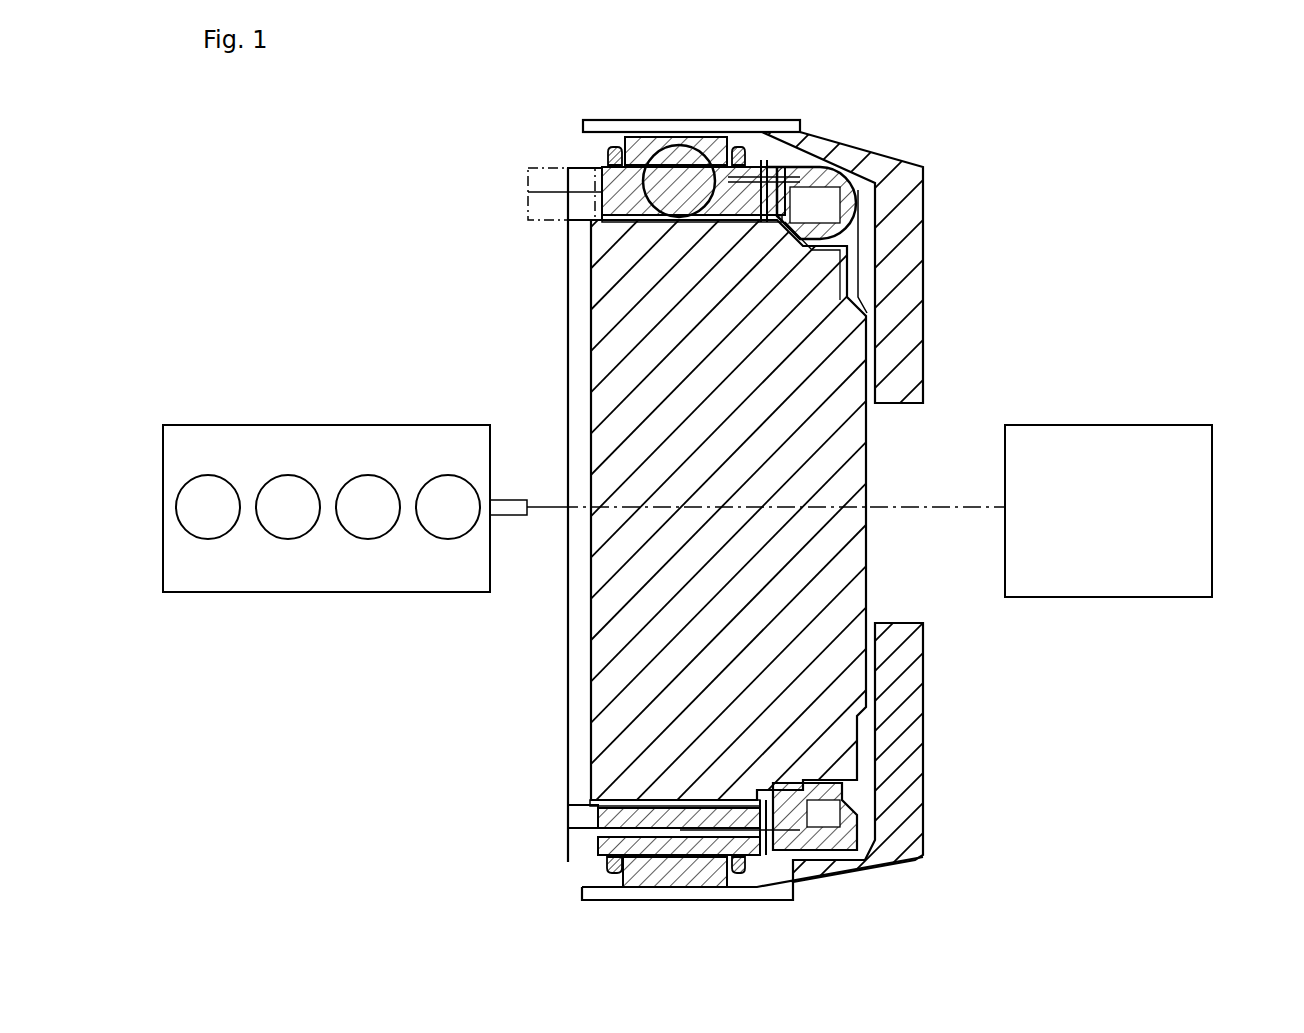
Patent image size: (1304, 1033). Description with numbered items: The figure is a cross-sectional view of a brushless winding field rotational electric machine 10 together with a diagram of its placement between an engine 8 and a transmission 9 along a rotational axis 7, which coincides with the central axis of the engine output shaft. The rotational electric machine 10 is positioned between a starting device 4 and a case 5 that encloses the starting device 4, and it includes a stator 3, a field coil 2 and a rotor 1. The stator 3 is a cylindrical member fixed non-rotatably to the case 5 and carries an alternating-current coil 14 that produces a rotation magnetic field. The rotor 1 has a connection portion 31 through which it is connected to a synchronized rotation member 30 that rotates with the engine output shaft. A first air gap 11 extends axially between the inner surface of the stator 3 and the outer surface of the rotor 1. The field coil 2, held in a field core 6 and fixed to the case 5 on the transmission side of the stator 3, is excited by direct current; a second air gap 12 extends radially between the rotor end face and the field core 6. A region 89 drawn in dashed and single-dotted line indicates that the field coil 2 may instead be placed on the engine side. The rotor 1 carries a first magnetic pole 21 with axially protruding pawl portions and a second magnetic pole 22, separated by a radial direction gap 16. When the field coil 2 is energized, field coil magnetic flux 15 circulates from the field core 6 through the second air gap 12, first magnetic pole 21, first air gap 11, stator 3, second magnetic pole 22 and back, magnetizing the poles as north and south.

The rotor 1 is at (556, 190).
The field coil 2 is at (845, 185).
The stator 3 is at (590, 152).
The starting device 4 is at (597, 343).
The case 5 is at (640, 125).
The field core 6 is at (868, 205).
The rotational axis 7 is at (548, 500).
The engine 8 is at (207, 432).
The transmission 9 is at (1212, 515).
The rotational electric machine 10 is at (437, 118).
The first air gap 11 is at (690, 150).
The second air gap 12 is at (755, 178).
The alternating-current coil 14 is at (620, 147).
The field coil magnetic flux 15 is at (840, 212).
The radial direction gap 16 is at (690, 835).
The first magnetic pole 21 is at (765, 160).
The second magnetic pole 22 is at (612, 188).
The synchronized rotation member 30 is at (567, 715).
The connection portion 31 is at (575, 205).
The region 89 is at (528, 200).